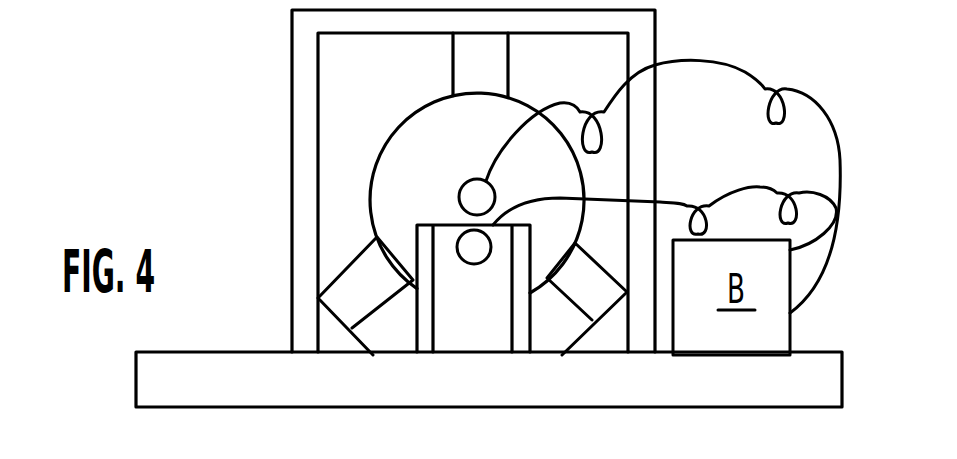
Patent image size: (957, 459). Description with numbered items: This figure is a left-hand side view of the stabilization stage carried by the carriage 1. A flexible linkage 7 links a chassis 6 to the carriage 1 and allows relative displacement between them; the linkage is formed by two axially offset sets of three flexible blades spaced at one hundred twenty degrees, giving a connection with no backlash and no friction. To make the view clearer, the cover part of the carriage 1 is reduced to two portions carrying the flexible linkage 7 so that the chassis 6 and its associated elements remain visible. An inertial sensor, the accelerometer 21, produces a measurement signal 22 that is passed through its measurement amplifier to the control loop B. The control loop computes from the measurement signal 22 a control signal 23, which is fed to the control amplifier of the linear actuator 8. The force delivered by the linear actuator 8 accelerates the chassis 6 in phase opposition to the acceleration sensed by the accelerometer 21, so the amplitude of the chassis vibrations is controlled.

The carriage 1 is at (653, 12).
The chassis 6 is at (519, 97).
The flexible linkage 7 is at (453, 70).
The linear actuator 8 is at (417, 225).
The accelerometer 21 is at (496, 197).
The measurement signal 22 is at (842, 144).
The control signal 23 is at (657, 202).